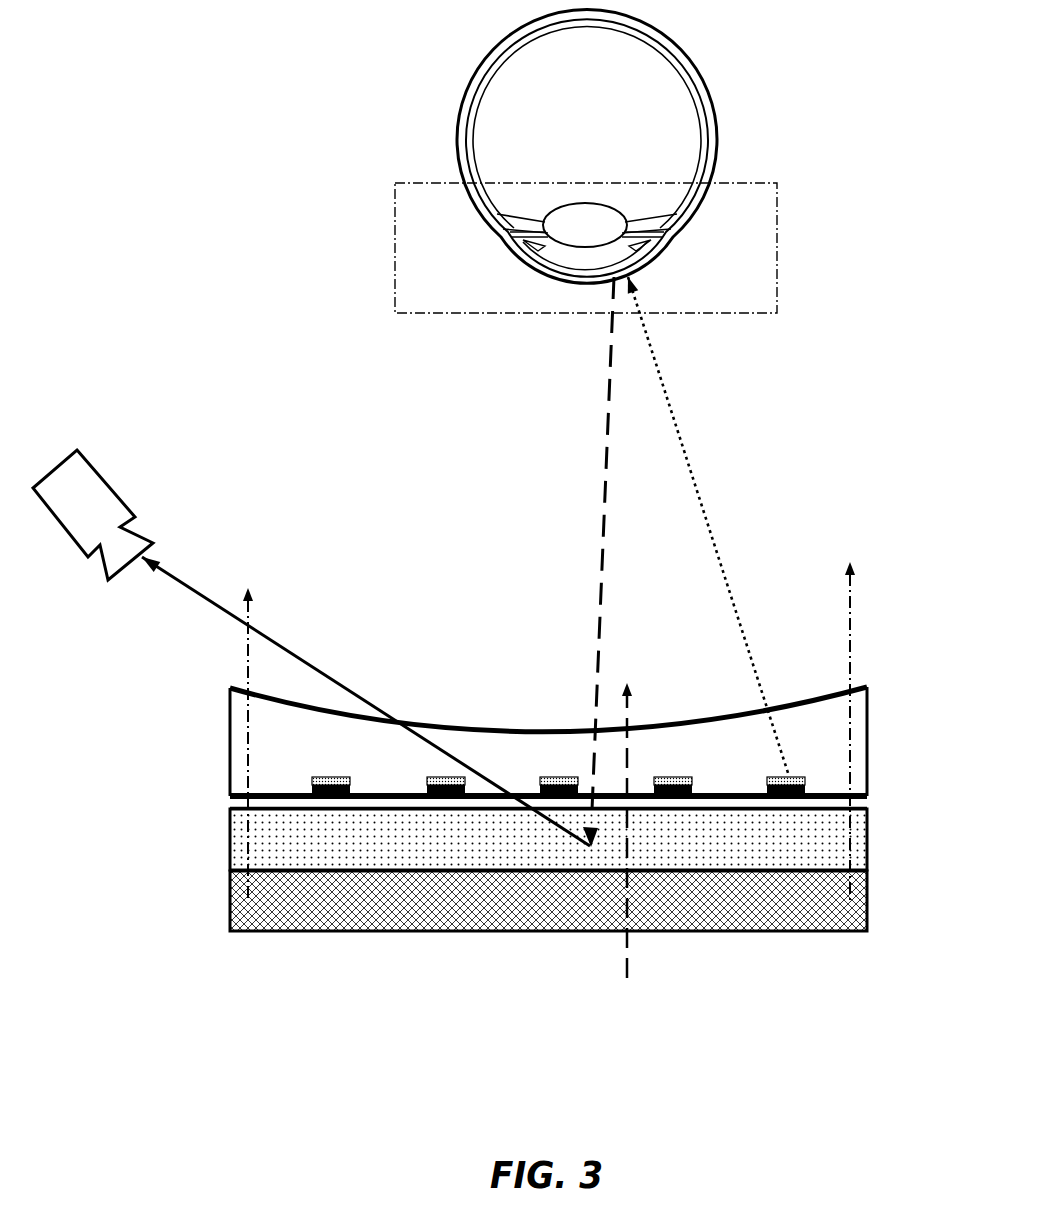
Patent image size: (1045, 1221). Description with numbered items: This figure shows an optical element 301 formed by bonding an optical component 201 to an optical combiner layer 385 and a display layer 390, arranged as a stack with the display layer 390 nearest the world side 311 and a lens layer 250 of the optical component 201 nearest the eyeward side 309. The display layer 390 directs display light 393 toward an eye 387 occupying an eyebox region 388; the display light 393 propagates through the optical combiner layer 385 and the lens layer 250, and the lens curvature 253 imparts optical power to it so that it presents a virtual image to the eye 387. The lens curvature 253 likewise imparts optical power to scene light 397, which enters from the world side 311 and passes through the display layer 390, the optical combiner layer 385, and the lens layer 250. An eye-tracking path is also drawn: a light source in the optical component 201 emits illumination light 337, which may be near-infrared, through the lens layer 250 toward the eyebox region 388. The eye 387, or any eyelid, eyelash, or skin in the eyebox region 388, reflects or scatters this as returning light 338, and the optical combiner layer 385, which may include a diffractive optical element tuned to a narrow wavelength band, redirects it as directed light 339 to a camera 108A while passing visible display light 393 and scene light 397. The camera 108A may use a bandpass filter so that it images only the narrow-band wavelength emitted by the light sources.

The eye 387 is at (713, 107).
The eyebox region 388 is at (393, 228).
The camera 108A is at (100, 475).
The illumination light 337 is at (690, 420).
The returning light 338 is at (605, 515).
The directed light 339 is at (295, 652).
The eyeward side 309 is at (771, 572).
The display light 393 is at (561, 705).
The scene light 397 is at (627, 863).
The world side 311 is at (386, 960).
The optical element 301 is at (213, 688).
The optical component 201 is at (588, 733).
The lens curvature 253 is at (537, 720).
The lens layer 250 is at (747, 777).
The optical combiner layer 385 is at (870, 808).
The display layer 390 is at (870, 871).